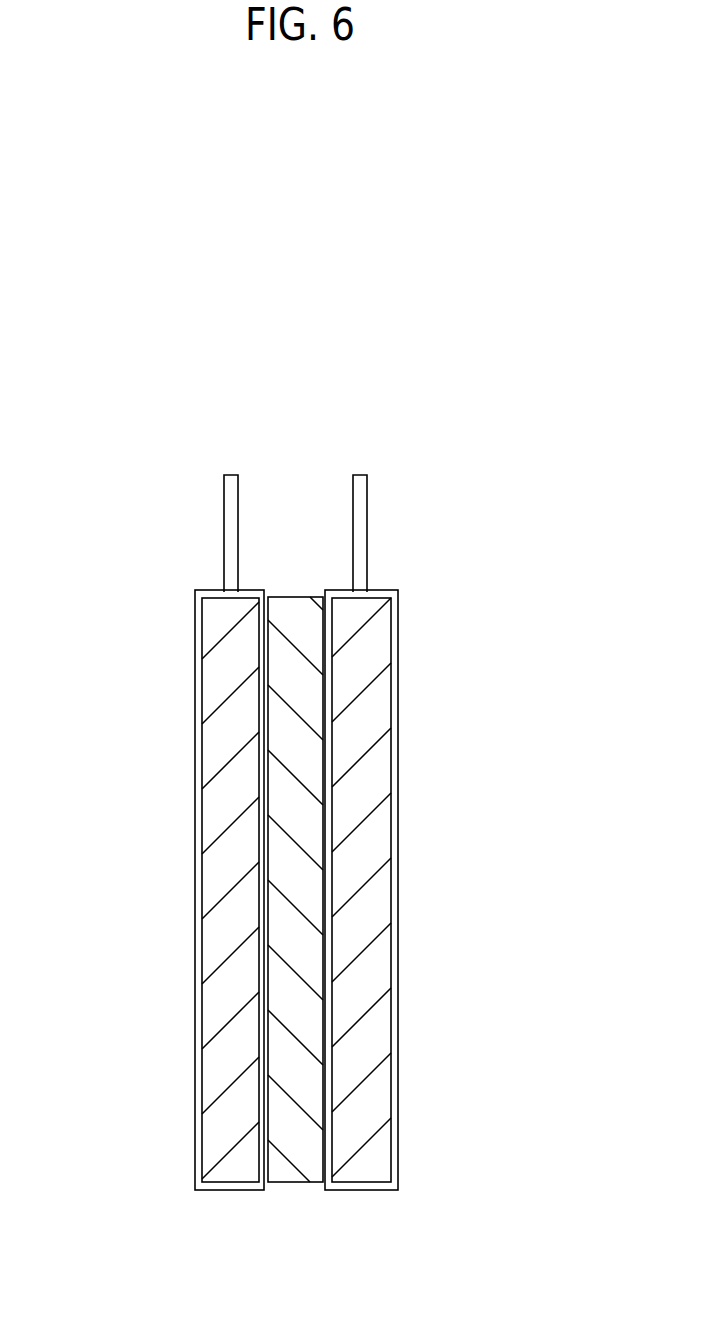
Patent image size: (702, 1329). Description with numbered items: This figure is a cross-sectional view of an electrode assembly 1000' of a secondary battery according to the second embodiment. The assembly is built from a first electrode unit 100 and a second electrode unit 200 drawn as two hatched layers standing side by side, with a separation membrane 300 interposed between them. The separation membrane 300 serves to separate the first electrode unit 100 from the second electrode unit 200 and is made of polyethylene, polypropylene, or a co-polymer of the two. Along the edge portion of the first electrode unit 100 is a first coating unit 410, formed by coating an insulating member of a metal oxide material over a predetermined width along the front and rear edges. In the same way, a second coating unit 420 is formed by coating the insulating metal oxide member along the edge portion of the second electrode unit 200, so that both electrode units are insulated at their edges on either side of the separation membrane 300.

The electrode assembly 1000' is at (305, 701).
The first electrode unit 100 is at (363, 677).
The second electrode unit 200 is at (217, 687).
The separation membrane 300 is at (287, 610).
The first coating unit 410 is at (375, 590).
The second coating unit 420 is at (221, 592).